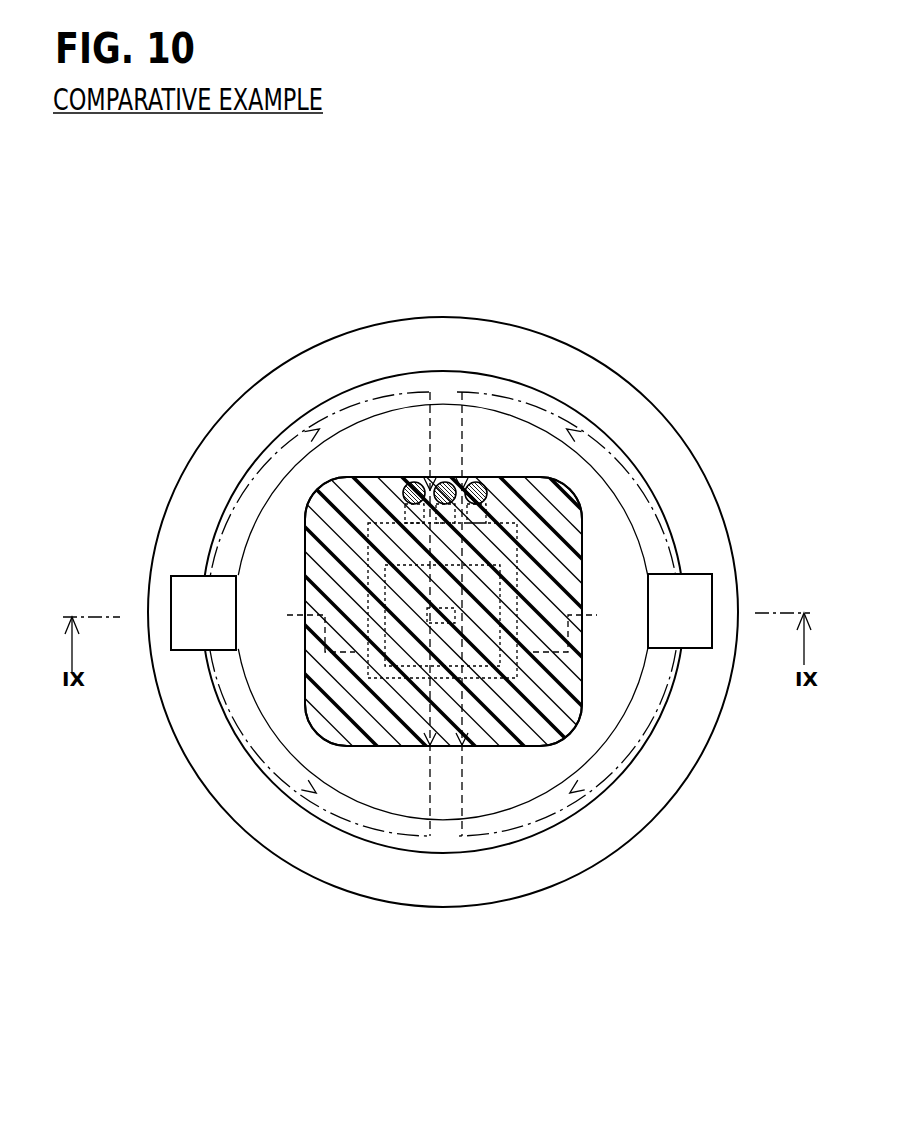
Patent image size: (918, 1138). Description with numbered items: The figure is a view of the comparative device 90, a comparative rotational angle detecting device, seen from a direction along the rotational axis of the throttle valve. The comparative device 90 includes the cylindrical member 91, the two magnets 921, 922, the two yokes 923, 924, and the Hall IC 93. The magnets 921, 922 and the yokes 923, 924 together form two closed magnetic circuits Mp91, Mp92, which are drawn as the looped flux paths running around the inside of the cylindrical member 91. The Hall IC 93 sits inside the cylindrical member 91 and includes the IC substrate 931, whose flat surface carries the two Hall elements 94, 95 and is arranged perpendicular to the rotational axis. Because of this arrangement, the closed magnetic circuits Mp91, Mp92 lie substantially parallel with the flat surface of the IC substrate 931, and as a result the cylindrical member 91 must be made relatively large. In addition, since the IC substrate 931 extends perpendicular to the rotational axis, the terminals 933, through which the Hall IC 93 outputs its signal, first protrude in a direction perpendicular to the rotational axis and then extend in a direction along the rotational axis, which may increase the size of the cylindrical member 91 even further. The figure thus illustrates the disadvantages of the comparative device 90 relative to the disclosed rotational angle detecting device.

The comparative device 90 is at (223, 346).
The cylindrical member 91 is at (635, 432).
The magnet 921 is at (187, 595).
The magnet 922 is at (695, 587).
The yoke 923 is at (558, 410).
The yoke 924 is at (448, 835).
The Hall IC 93 is at (360, 515).
The IC substrate 931 is at (513, 580).
The terminals 933 is at (414, 482).
The Hall element 94 is at (450, 612).
The Hall element 95 is at (450, 612).
The closed magnetic circuit Mp91 is at (337, 818).
The closed magnetic circuit Mp92 is at (557, 818).